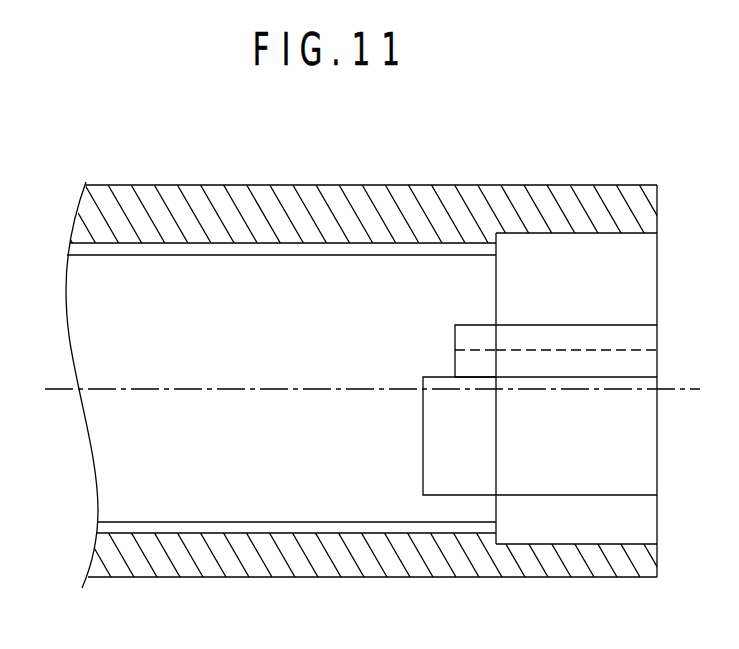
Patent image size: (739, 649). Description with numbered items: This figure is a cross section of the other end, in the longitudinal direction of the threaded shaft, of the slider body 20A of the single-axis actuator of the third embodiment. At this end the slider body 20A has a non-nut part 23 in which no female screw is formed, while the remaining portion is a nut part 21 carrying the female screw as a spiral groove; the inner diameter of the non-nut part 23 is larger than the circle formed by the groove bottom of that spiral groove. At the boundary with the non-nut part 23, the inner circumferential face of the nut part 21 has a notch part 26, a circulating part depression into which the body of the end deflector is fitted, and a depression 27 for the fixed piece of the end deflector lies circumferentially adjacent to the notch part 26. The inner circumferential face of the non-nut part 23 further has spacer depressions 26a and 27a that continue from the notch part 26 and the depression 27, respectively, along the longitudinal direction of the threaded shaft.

The slider body 20A is at (187, 168).
The nut part 21 is at (192, 528).
The non-nut part 23 is at (623, 528).
The notch part 26 is at (463, 482).
The spacer depression 26a is at (537, 482).
The depression 27 is at (477, 333).
The spacer depression 27a is at (577, 333).